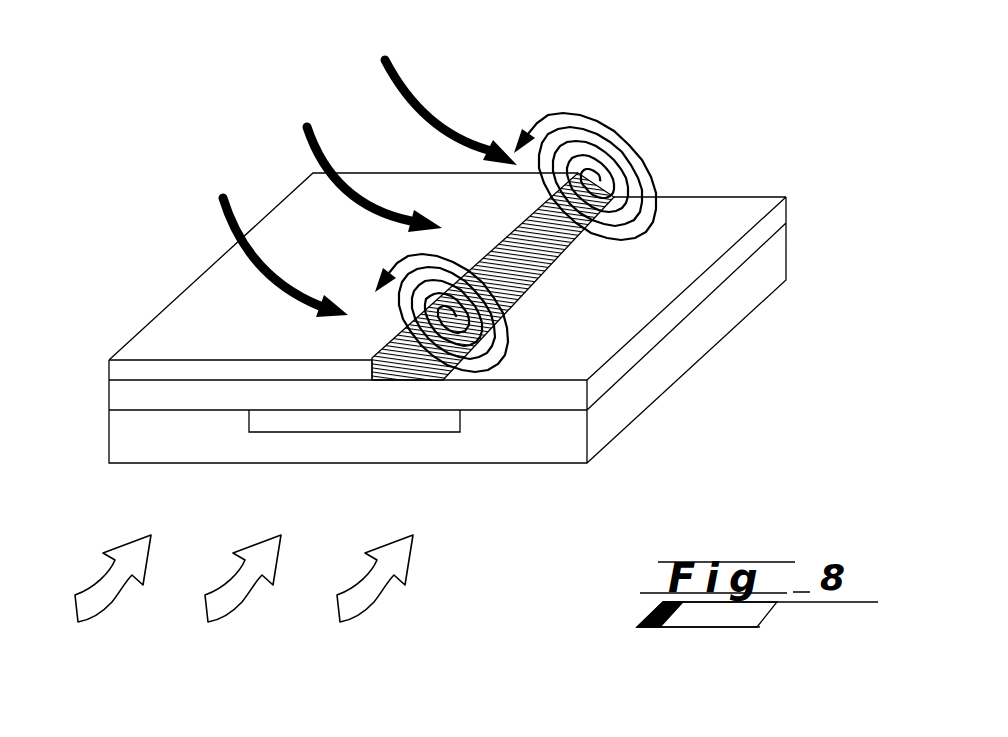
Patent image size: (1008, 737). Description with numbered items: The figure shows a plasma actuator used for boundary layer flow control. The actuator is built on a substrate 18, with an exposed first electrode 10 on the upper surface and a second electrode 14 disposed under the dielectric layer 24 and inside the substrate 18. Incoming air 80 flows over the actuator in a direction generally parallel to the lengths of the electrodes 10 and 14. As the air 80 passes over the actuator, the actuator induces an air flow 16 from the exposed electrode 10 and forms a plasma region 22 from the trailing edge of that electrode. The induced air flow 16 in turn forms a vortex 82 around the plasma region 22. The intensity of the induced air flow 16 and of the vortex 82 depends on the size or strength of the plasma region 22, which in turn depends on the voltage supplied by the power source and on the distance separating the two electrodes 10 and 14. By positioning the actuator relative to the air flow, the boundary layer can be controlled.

The first electrode 10 is at (185, 367).
The second electrode 14 is at (417, 423).
The induced air flow 16 is at (432, 112).
The substrate 18 is at (675, 358).
The plasma region 22 is at (517, 298).
The dielectric layer 24 is at (710, 297).
The air 80 is at (377, 605).
The vortex 82 is at (607, 132).